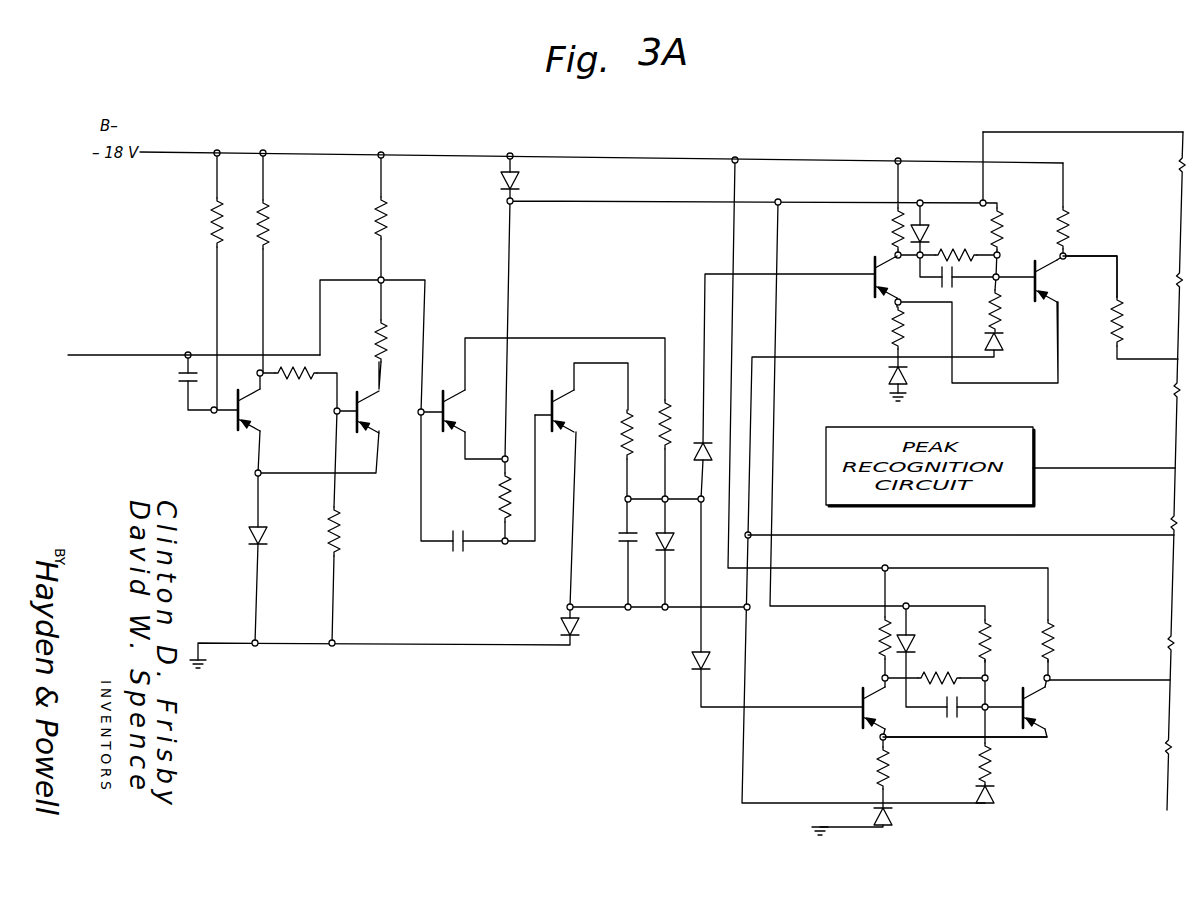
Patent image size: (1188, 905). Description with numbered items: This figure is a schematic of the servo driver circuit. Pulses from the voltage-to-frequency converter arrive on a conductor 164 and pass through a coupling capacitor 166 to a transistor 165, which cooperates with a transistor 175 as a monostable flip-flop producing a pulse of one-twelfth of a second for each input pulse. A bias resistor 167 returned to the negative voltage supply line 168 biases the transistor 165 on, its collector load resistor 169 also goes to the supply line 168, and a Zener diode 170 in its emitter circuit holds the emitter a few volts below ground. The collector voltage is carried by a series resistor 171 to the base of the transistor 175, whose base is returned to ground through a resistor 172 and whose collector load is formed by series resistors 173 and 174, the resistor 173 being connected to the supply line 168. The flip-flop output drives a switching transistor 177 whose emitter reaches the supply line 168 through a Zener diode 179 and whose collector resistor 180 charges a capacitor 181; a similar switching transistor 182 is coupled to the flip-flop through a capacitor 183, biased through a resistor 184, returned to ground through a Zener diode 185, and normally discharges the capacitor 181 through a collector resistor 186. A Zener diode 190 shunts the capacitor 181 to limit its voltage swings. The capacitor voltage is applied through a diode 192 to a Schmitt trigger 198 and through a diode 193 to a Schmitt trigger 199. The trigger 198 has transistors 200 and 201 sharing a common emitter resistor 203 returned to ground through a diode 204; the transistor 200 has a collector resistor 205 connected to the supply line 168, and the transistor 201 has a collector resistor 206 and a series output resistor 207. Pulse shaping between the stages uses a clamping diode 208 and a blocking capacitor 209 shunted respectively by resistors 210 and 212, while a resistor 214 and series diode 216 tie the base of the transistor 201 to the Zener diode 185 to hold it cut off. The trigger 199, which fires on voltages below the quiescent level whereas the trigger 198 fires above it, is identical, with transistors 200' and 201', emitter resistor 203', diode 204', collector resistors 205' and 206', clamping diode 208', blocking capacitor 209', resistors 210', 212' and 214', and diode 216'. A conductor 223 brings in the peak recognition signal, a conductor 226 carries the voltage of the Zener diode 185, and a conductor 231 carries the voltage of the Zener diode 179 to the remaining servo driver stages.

The conductor 164 is at (152, 354).
The transistor 165 is at (232, 416).
The coupling capacitor 166 is at (180, 376).
The bias resistor 167 is at (212, 226).
The negative voltage supply line 168 is at (644, 159).
The collector load resistor 169 is at (268, 226).
The Zener diode 170 is at (266, 540).
The series resistor 171 is at (290, 377).
The resistor 172 is at (340, 535).
The collector resistor 173 is at (388, 213).
The collector resistor 174 is at (376, 342).
The transistor 175 is at (362, 407).
The switching transistor 177 is at (448, 405).
The Zener diode 179 is at (520, 183).
The resistor 180 is at (675, 412).
The capacitor 181 is at (614, 537).
The switching transistor 182 is at (550, 405).
The capacitor 183 is at (457, 556).
The resistor 184 is at (498, 498).
The Zener diode 185 is at (560, 625).
The collector resistor 186 is at (620, 440).
The Zener diode 190 is at (653, 548).
The diode 192 is at (696, 452).
The diode 193 is at (690, 660).
The Schmitt trigger circuit 198 is at (1116, 240).
The Schmitt trigger circuit 199 is at (1066, 724).
The transistor 200 is at (855, 268).
The transistor 201 is at (1064, 281).
The common emitter resistor 203 is at (860, 326).
The diode 204 is at (861, 378).
The collector resistor 205 is at (861, 227).
The collector resistor 206 is at (1084, 213).
The series output resistor 207 is at (1122, 320).
The clamping diode 208 is at (938, 205).
The series blocking capacitor 209 is at (932, 303).
The resistor 210 is at (1018, 214).
The resistor 212 is at (956, 235).
The resistor 214 is at (1022, 311).
The series diode 216 is at (1013, 353).
The conductor 223 is at (1106, 467).
The conductor 226 is at (1104, 534).
The conductor 231 is at (1072, 130).
The transistor 200' is at (832, 710).
The transistor 201' is at (1067, 708).
The common emitter resistor 203' is at (844, 768).
The diode 204' is at (883, 816).
The collector resistor 205' is at (842, 638).
The collector resistor 206' is at (1080, 641).
The clamping diode 208' is at (932, 629).
The series blocking capacitor 209' is at (936, 736).
The resistor 210' is at (1008, 619).
The resistor 212' is at (944, 659).
The resistor 214' is at (1020, 764).
The series diode 216' is at (1021, 797).